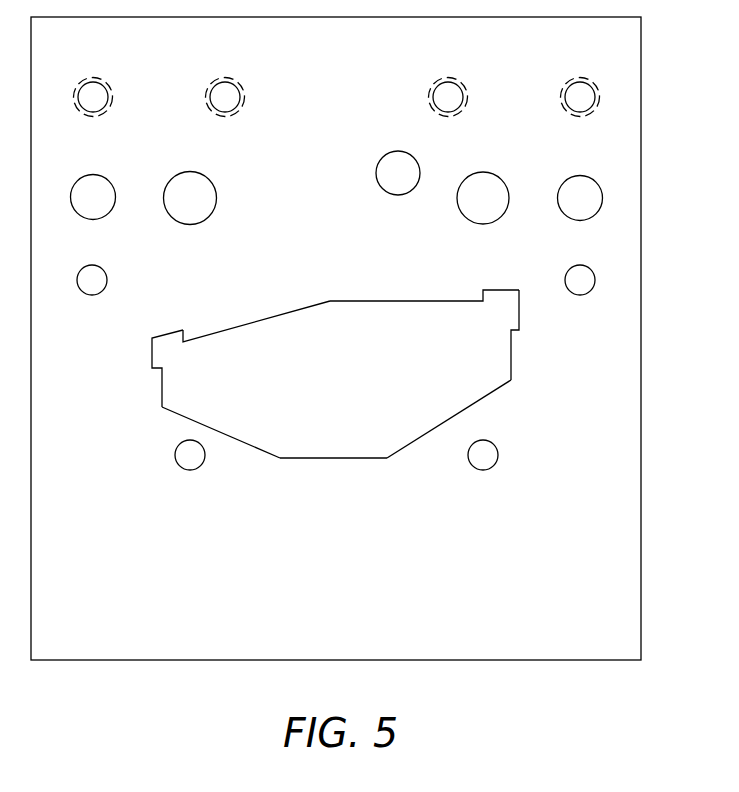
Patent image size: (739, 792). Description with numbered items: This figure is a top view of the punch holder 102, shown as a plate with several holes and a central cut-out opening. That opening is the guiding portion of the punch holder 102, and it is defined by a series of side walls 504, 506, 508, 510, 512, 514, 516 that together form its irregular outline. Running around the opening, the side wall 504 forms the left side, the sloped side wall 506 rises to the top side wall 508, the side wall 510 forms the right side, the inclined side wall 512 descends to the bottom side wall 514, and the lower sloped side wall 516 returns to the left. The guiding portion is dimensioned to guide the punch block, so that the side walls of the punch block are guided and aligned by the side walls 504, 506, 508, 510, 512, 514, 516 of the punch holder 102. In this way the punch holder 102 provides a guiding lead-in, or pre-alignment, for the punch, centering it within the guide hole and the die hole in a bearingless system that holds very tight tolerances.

The punch holder 102 is at (641, 339).
The side wall 504 is at (163, 388).
The side wall 506 is at (260, 322).
The side wall 508 is at (408, 303).
The side wall 510 is at (511, 358).
The side wall 512 is at (450, 417).
The side wall 514 is at (333, 458).
The side wall 516 is at (222, 428).